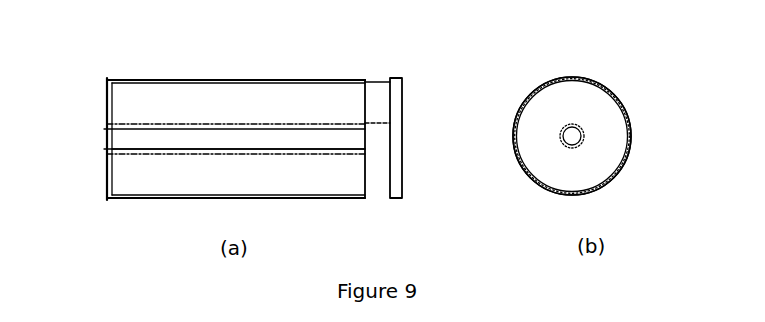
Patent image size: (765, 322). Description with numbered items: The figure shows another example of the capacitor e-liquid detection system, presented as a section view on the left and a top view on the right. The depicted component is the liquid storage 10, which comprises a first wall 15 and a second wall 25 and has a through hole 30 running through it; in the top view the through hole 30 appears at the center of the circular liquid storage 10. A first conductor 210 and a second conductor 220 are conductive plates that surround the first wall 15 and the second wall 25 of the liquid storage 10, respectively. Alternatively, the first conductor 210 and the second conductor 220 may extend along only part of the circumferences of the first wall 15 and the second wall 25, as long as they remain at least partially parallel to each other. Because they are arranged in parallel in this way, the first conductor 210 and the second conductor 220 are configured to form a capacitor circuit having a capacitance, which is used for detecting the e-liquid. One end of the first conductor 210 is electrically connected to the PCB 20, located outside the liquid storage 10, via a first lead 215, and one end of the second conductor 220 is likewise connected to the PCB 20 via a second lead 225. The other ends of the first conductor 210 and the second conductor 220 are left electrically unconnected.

The liquid storage 10 is at (670, 132).
The first wall 15 is at (158, 147).
The PCB 20 is at (393, 185).
The second wall 25 is at (115, 80).
The through hole 30 is at (113, 136).
The first conductor 210 is at (415, 108).
The first lead 215 is at (426, 140).
The second conductor 220 is at (461, 102).
The second lead 225 is at (426, 61).